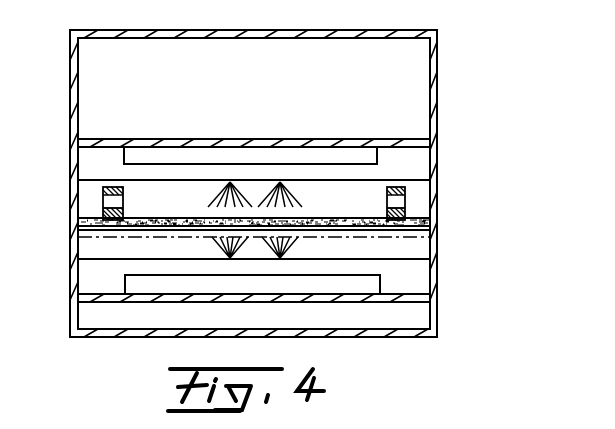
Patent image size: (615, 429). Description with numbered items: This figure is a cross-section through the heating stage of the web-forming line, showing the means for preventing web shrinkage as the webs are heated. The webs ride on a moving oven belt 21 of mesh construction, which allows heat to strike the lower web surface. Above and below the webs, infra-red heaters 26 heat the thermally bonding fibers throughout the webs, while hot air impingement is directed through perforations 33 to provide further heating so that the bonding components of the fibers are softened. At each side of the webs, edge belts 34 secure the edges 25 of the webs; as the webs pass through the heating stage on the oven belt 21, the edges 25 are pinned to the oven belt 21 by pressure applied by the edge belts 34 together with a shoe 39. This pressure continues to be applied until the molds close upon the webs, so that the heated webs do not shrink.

The oven belt 21 is at (84, 239).
The edges 25 is at (100, 218).
The infra-red heaters 26 is at (362, 154).
The perforations 33 is at (285, 189).
The edge belts 34 is at (103, 203).
The shoe 39 is at (123, 212).